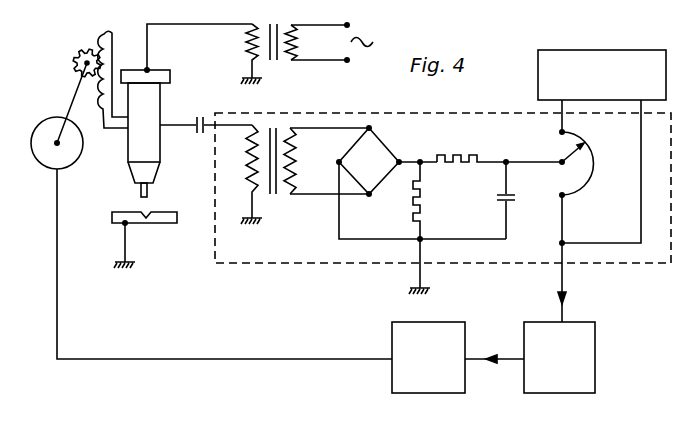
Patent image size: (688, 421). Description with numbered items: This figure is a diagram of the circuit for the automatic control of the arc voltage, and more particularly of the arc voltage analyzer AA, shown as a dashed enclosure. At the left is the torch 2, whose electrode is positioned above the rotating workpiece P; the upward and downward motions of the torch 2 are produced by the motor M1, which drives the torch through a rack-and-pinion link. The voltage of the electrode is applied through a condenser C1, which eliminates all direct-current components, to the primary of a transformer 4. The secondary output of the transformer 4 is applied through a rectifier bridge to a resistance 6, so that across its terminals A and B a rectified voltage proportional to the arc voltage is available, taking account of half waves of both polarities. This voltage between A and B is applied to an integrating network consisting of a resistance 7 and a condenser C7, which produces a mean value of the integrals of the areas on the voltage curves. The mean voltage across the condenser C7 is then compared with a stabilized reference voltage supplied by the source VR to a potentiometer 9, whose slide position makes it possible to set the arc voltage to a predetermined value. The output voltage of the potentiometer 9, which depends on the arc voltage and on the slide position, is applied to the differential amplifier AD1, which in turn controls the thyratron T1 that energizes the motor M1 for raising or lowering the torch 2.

The torch 2 is at (161, 103).
The motor M1 is at (73, 158).
The workpiece P is at (168, 223).
The capacitor C1 is at (206, 138).
The arc voltage analyzer AA is at (501, 123).
The transformer 4 is at (272, 195).
The terminal A is at (420, 158).
The resistance 6 is at (413, 206).
The resistance R7 7 is at (471, 148).
The condenser C7 is at (517, 200).
The terminal B is at (423, 241).
The potentiometer 9 is at (584, 182).
The reference voltage source VR is at (602, 75).
The thyratron T1 is at (428, 357).
The differential amplifier AD1 is at (559, 357).